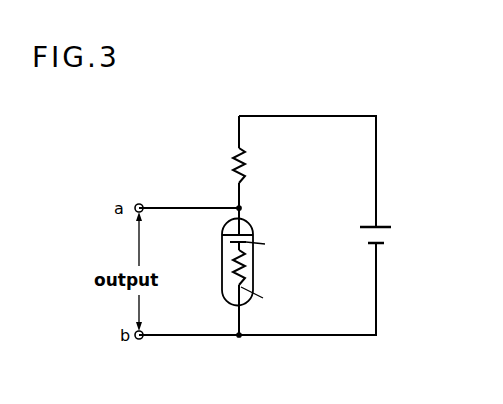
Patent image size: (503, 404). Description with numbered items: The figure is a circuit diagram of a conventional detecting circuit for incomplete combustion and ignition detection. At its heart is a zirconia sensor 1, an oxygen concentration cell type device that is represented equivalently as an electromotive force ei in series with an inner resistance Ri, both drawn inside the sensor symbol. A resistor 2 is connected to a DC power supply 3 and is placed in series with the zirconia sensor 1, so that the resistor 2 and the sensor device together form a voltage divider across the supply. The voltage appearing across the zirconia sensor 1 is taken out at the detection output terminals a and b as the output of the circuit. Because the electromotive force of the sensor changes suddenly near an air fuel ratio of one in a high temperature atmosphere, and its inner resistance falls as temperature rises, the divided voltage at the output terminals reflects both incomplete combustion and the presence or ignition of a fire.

The zirconia sensor 1 is at (218, 258).
The resistor 2 is at (249, 172).
The DC power supply 3 is at (387, 236).